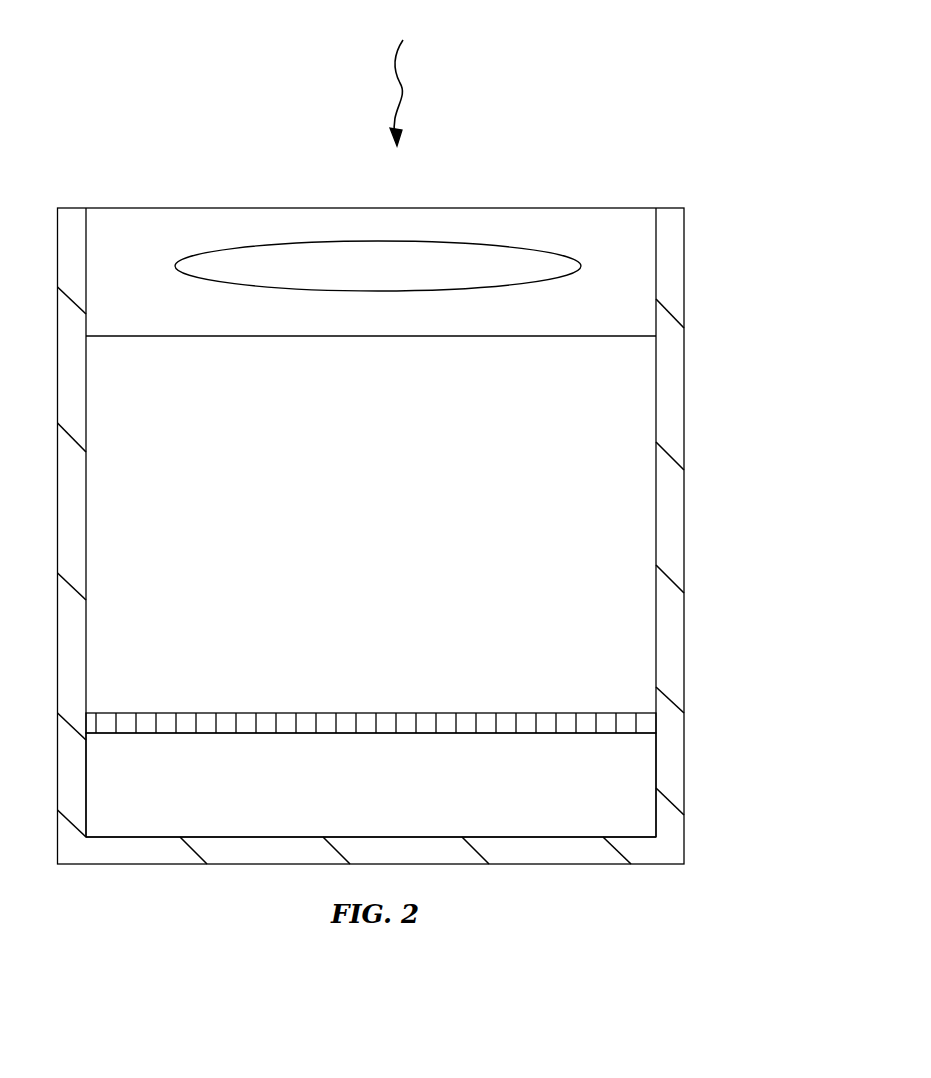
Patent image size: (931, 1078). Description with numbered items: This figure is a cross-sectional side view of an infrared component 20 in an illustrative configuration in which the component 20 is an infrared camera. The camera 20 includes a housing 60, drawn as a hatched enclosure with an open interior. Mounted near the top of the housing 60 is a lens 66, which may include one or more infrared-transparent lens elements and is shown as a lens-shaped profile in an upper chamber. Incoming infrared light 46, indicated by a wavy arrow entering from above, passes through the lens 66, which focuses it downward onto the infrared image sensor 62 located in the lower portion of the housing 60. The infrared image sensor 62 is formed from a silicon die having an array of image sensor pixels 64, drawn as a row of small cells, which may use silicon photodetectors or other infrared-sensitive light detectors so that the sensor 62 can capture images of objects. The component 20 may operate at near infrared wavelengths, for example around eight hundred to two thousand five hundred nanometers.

The infrared component 20 is at (750, 272).
The infrared light 46 is at (400, 83).
The housing 60 is at (673, 524).
The infrared image sensor 62 is at (637, 757).
The image sensor pixels 64 is at (305, 725).
The lens 66 is at (617, 230).